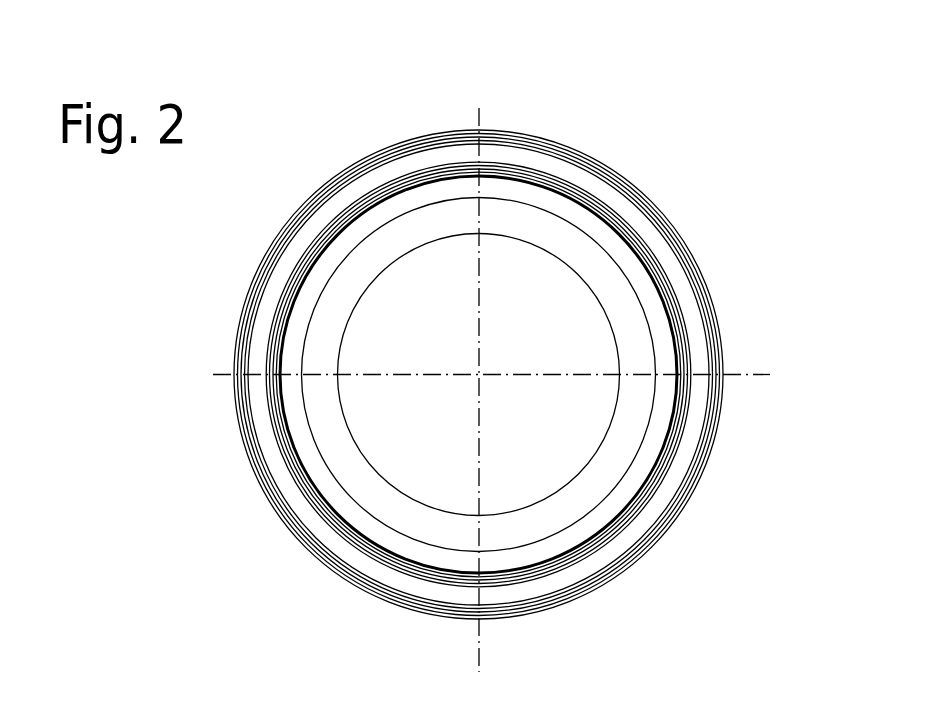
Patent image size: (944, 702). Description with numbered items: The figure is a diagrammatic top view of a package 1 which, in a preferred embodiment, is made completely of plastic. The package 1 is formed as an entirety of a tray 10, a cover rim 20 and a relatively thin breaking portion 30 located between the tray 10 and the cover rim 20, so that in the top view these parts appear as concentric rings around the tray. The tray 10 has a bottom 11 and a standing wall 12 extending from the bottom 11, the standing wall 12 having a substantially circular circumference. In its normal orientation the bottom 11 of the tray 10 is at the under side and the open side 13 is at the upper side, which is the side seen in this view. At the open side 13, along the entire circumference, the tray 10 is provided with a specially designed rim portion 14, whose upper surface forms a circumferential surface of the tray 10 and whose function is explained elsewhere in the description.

The package 1 is at (243, 506).
The tray 10 is at (320, 340).
The bottom 11 is at (382, 325).
The standing wall 12 is at (350, 511).
The open side 13 is at (438, 268).
The rim portion 14 is at (661, 194).
The cover rim 20 is at (679, 265).
The breaking portion 30 is at (682, 336).